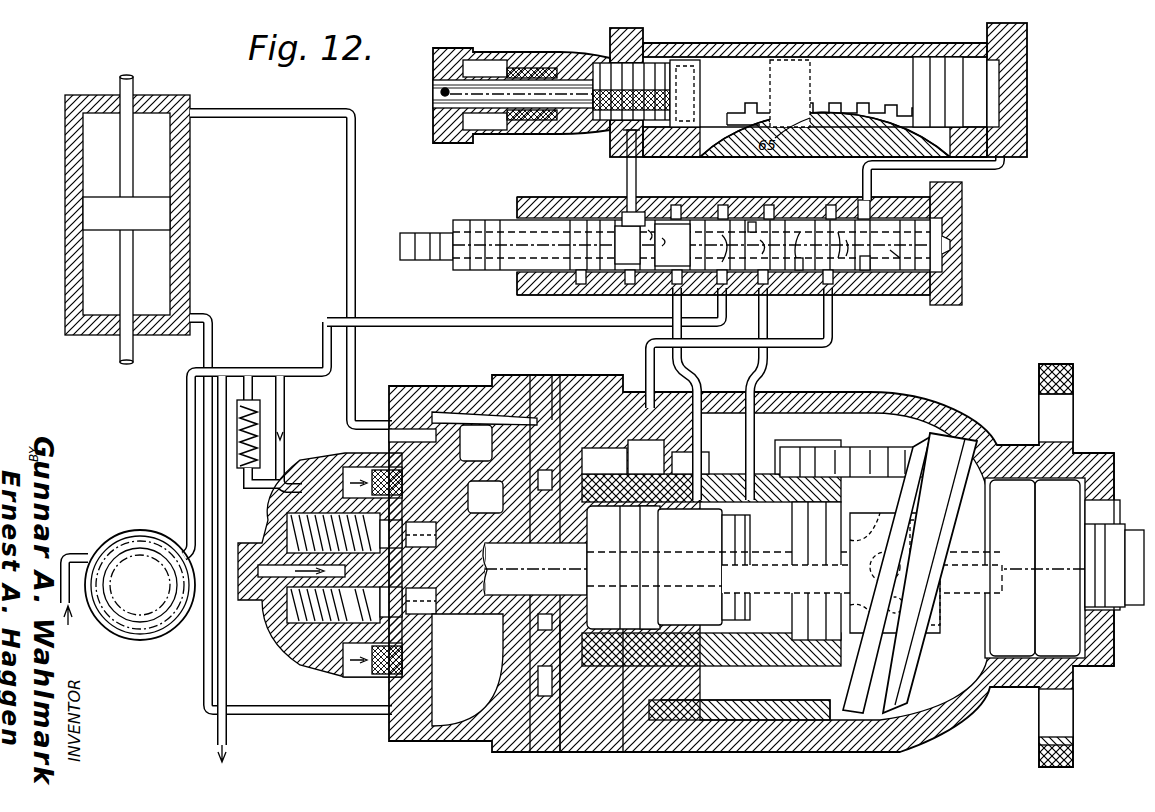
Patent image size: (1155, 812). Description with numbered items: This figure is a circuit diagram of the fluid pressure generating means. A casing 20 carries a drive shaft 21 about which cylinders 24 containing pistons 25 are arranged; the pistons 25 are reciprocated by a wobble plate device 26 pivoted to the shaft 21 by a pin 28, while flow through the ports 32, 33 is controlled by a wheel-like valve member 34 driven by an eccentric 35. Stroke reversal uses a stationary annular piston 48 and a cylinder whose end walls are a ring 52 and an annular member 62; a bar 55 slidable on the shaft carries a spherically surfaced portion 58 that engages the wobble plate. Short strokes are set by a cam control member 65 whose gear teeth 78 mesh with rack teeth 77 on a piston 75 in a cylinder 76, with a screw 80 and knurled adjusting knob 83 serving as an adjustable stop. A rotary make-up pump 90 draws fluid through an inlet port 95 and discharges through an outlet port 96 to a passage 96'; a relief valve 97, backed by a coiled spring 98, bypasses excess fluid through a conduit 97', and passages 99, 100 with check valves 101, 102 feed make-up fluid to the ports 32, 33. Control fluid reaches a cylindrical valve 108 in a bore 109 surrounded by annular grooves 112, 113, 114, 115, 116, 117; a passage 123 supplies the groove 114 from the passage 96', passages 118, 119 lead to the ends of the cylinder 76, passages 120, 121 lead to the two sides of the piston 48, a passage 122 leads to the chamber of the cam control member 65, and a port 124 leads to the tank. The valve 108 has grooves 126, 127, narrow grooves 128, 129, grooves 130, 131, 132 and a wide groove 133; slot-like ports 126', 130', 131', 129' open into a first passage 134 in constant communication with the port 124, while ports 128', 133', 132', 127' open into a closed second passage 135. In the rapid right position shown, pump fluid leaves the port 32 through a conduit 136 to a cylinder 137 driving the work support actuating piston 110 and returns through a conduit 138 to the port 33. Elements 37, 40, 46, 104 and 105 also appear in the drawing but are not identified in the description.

The casing 20 is at (957, 394).
The drive shaft 21 is at (1140, 607).
The cylinders 24 is at (623, 567).
The pistons 25 is at (855, 462).
The wobble plate device 26 is at (932, 664).
The pin 28 is at (870, 565).
The port 32 is at (498, 505).
The port 33 is at (488, 450).
The wheel-like valve member 34 is at (580, 700).
The eccentric 35 is at (547, 612).
The mounting flange 37 is at (1039, 756).
The cavity 40 is at (548, 752).
The housing top wall 46 is at (517, 415).
The stationary annular piston 48 is at (716, 553).
The ring 52 is at (790, 504).
The bar 55 is at (862, 595).
The spherically surfaced portion 58 is at (894, 620).
The annular member 62 is at (648, 624).
The cam control member 65 is at (712, 720).
The piston 75 is at (818, 60).
The cylinder 76 is at (1000, 66).
The rack teeth 77 is at (740, 110).
The gear teeth 78 is at (770, 118).
The screw 80 is at (568, 88).
The knurled adjusting knob 83 is at (456, 52).
The rotary make-up pump 90 is at (160, 622).
The inlet port 95 is at (82, 552).
The outlet port 96 is at (238, 439).
The passage 96' is at (237, 432).
The make-up pump relief valve 97 is at (272, 422).
The conduit 97' is at (233, 569).
The coiled spring 98 is at (262, 456).
The passage 99 is at (300, 648).
The passage 100 is at (340, 490).
The check valve 101 is at (360, 678).
The check valve 102 is at (372, 466).
The port 104 is at (421, 534).
The port 105 is at (421, 601).
The cylindrical valve 108 is at (525, 215).
The cylindrical bore 109 is at (962, 214).
The work support actuating piston 110 is at (160, 213).
The annular groove 112 is at (624, 200).
The annular groove 113 is at (678, 205).
The annular groove 114 is at (723, 205).
The annular groove 115 is at (768, 205).
The annular groove 116 is at (830, 205).
The annular groove 117 is at (870, 200).
The passage 118 is at (627, 170).
The passage 119 is at (990, 168).
The passage 120 is at (703, 372).
The passage 121 is at (768, 322).
The passage 122 is at (833, 312).
The passage 123 is at (548, 295).
The port 124 is at (965, 243).
The groove 126 is at (665, 245).
The slot-like port 126' is at (569, 224).
The groove 127 is at (892, 244).
The slot-like port 127' is at (888, 258).
The extremely narrow groove 128 is at (588, 289).
The slot-like port 128' is at (628, 289).
The extremely narrow groove 129 is at (828, 205).
The slot-like port 129' is at (833, 211).
The groove 130 is at (665, 194).
The slot-like port 130' is at (655, 207).
The groove 131 is at (778, 204).
The slot-like port 131' is at (752, 202).
The groove 132 is at (809, 204).
The slot-like port 132' is at (809, 285).
The wide groove 133 is at (716, 218).
The slot-like port 133' is at (694, 290).
The first passage 134 is at (629, 245).
The second passage 135 is at (672, 245).
The conduit 136 is at (213, 335).
The cylinder 137 is at (75, 270).
The conduit 138 is at (298, 118).